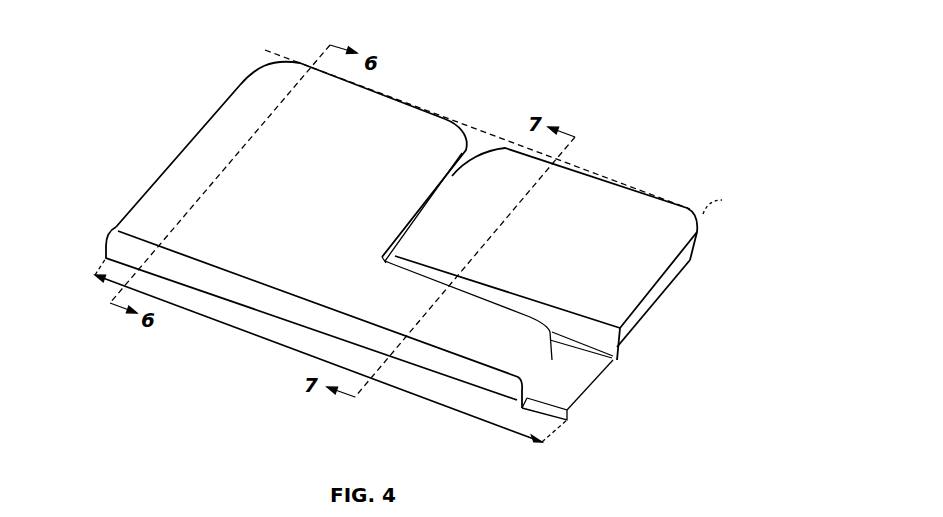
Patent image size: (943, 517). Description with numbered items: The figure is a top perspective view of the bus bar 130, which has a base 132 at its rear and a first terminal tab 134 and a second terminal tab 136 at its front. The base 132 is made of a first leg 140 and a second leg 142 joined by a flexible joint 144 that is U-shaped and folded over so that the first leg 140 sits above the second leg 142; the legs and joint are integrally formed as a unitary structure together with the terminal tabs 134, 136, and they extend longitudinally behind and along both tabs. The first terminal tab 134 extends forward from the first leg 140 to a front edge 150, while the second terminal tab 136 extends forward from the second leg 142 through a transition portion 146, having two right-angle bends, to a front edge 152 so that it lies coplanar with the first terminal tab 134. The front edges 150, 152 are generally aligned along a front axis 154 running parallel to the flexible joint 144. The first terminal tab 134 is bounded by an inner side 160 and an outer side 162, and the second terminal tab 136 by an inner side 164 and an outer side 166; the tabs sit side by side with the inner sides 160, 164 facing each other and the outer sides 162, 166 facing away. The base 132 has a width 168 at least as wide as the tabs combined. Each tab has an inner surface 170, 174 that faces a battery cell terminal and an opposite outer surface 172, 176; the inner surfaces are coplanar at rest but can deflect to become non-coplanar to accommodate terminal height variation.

The bus bar 130 is at (542, 96).
The base 132 is at (323, 292).
The first terminal tab 134 is at (390, 130).
The second terminal tab 136 is at (672, 226).
The first leg 140 is at (570, 413).
The second leg 142 is at (575, 373).
The flexible joint 144 is at (550, 358).
The transition portion 146 is at (620, 350).
The front edge 150 is at (372, 90).
The front edge 152 is at (612, 203).
The front axis 154 is at (721, 207).
The inner side 160 is at (410, 230).
The outer side 162 is at (178, 153).
The inner side 164 is at (423, 207).
The outer side 166 is at (643, 307).
The width 168 is at (217, 320).
The inner surface 170 is at (465, 152).
The outer surface 172 is at (452, 145).
The inner surface 174 is at (692, 258).
The outer surface 176 is at (698, 234).